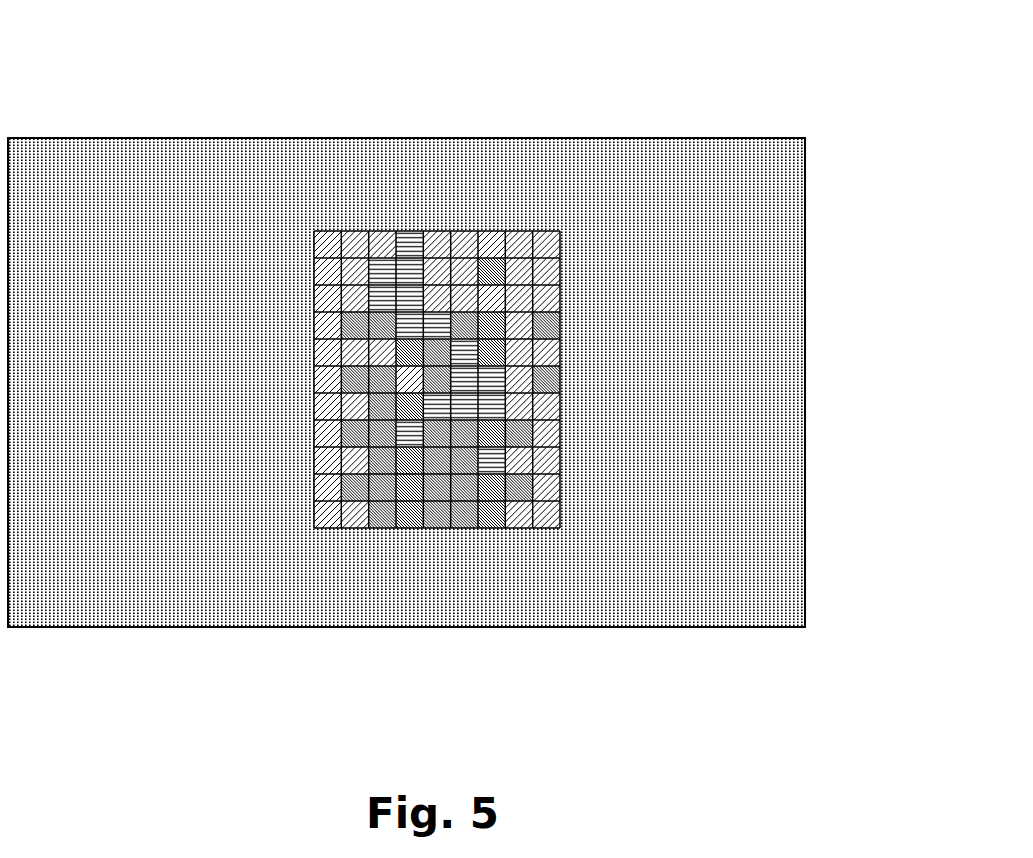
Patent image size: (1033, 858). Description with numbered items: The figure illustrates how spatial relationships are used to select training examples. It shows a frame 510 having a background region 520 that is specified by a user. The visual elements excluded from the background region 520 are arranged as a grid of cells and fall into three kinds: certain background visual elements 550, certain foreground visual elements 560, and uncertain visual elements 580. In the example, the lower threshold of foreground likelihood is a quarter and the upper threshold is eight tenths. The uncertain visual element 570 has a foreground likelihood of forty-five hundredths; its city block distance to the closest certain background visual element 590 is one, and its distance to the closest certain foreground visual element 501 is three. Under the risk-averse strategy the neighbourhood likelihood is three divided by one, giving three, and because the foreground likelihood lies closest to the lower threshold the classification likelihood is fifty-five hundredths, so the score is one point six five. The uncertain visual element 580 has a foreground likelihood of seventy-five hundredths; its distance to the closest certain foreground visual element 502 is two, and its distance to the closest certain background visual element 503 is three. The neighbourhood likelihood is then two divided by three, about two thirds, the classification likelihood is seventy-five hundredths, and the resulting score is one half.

The frame 510 is at (62, 138).
The background region 520 is at (142, 547).
The certain foreground visual element 501 is at (405, 277).
The certain foreground visual element 502 is at (413, 438).
The certain background visual element 503 is at (352, 512).
The certain background visual elements 550 is at (323, 517).
The certain foreground visual elements 560 is at (483, 475).
The uncertain visual element 570 is at (497, 257).
The uncertain visual element 580 is at (413, 483).
The certain background visual element 590 is at (497, 293).